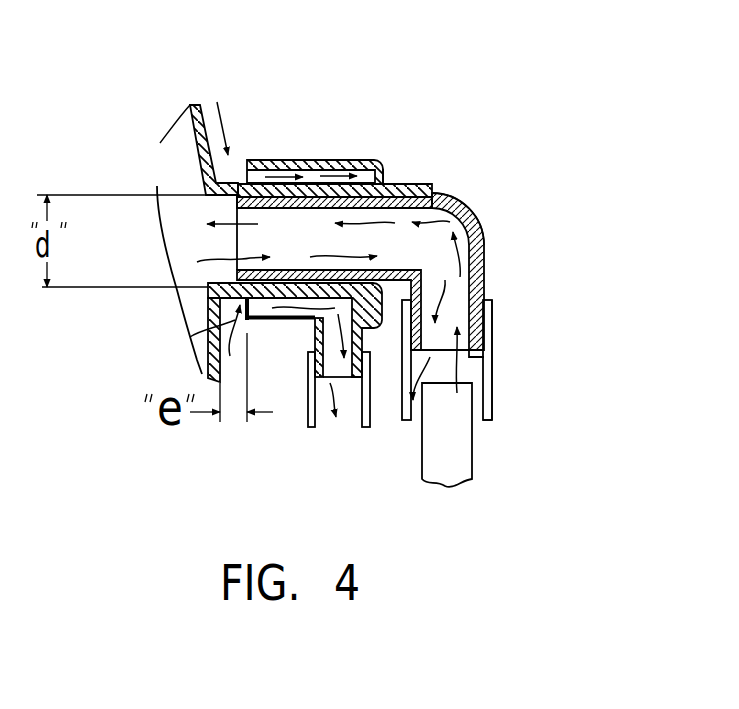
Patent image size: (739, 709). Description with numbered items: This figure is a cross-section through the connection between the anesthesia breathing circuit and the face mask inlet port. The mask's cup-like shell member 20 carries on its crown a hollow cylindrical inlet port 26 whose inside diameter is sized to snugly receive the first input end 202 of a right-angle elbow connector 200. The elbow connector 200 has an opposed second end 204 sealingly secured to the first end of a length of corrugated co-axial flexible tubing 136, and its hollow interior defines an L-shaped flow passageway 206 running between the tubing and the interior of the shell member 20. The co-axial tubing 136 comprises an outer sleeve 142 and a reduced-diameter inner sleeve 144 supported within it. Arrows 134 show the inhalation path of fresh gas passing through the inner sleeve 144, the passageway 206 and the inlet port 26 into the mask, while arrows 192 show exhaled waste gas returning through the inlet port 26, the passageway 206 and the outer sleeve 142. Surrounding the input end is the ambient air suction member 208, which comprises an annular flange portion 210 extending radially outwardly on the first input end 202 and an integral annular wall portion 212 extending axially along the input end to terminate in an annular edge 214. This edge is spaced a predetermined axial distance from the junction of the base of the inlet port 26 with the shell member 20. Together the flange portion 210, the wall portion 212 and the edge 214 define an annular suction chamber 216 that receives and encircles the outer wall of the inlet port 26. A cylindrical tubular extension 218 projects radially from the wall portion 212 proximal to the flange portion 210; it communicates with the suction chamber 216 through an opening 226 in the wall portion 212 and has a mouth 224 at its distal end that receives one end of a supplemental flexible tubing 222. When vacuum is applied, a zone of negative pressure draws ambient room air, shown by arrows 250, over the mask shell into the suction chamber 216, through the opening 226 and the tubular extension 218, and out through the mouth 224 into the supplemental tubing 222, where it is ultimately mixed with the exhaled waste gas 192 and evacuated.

The shell member 20 is at (199, 108).
The inlet port 26 is at (355, 153).
The fresh gas flow arrows 134 is at (205, 222).
The flexible tubing 136 is at (493, 416).
The outer sleeve 142 is at (492, 392).
The inner sleeve 144 is at (475, 470).
The exhaled waste gas flow arrows 192 is at (197, 262).
The elbow connector 200 is at (485, 205).
The first input end 202 is at (160, 143).
The second end 204 is at (492, 355).
The flow passageway 206 is at (463, 200).
The suction member 208 is at (358, 152).
The flange portion 210 is at (392, 186).
The wall portion 212 is at (313, 160).
The annular edge 214 is at (247, 160).
The suction chamber 216 is at (386, 160).
The tubular extension 218 is at (484, 318).
The supplemental flexible tubing 222 is at (309, 400).
The mouth 224 is at (355, 420).
The opening 226 is at (482, 277).
The scavenged ambient air flow arrows 250 is at (220, 128).